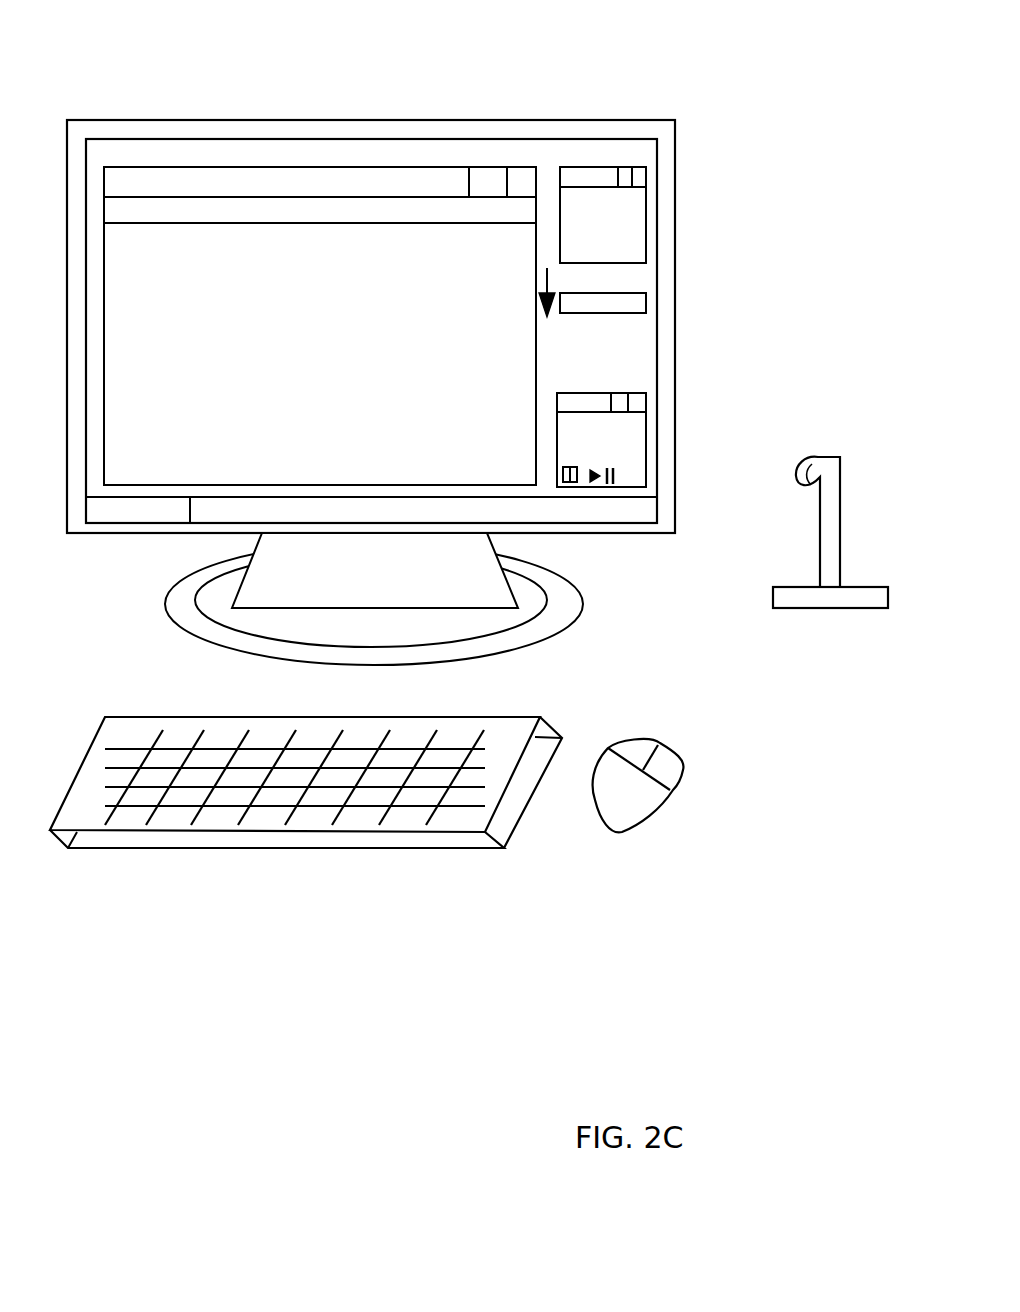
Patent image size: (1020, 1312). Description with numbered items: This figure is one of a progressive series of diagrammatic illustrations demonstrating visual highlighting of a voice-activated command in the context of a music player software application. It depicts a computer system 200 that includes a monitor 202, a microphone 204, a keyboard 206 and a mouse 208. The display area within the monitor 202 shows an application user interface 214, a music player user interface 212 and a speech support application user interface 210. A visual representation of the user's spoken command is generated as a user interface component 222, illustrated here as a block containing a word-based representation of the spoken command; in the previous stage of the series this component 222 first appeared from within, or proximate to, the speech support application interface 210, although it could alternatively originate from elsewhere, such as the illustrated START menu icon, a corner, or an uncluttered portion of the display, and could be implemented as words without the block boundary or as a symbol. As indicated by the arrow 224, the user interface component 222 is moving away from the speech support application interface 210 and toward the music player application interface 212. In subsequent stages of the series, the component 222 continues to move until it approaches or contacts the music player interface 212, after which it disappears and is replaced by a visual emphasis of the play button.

The computer system 200 is at (822, 95).
The monitor 202 is at (677, 470).
The microphone 204 is at (828, 453).
The keyboard 206 is at (517, 717).
The mouse 208 is at (677, 753).
The speech support application user interface 210 is at (647, 207).
The music player user interface 212 is at (647, 432).
The application user interface 214 is at (422, 120).
The user interface component 222 is at (646, 301).
The arrow 224 is at (612, 287).